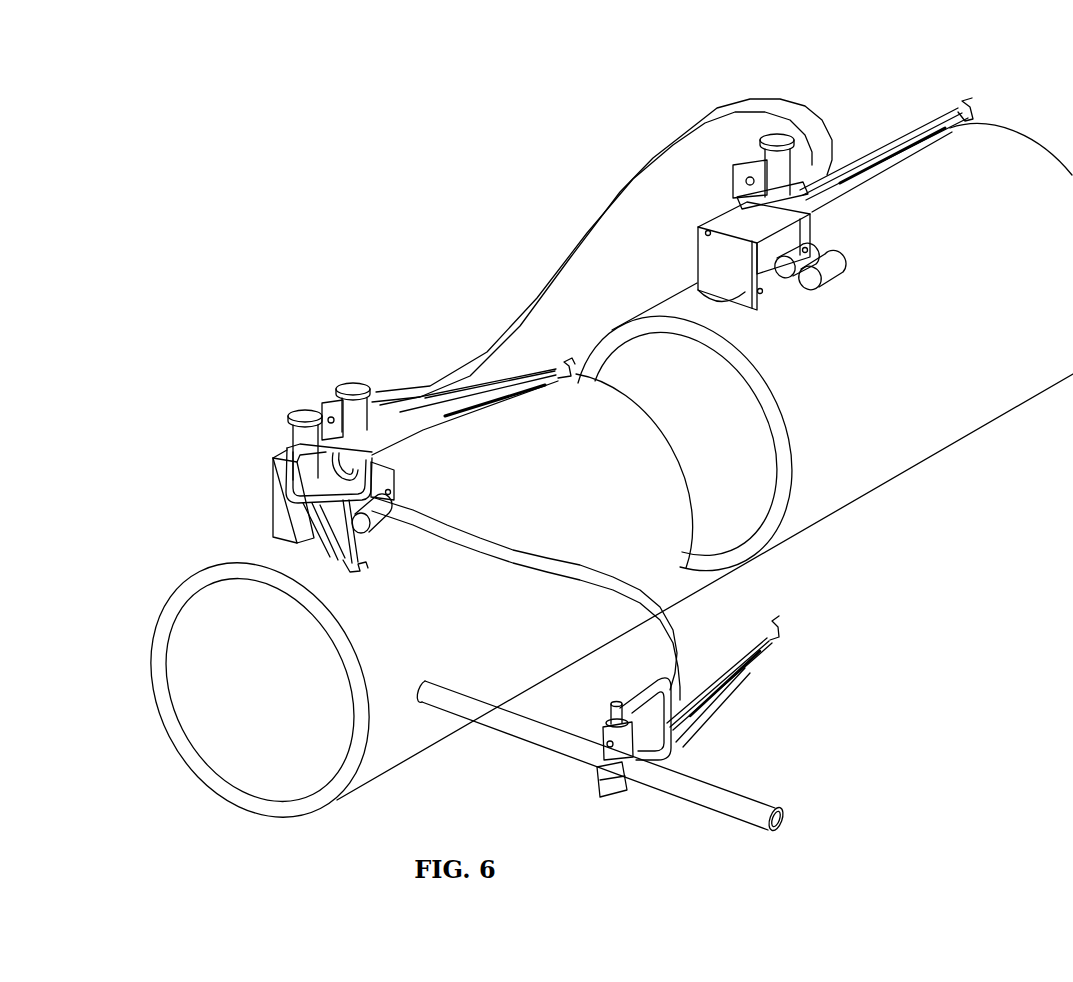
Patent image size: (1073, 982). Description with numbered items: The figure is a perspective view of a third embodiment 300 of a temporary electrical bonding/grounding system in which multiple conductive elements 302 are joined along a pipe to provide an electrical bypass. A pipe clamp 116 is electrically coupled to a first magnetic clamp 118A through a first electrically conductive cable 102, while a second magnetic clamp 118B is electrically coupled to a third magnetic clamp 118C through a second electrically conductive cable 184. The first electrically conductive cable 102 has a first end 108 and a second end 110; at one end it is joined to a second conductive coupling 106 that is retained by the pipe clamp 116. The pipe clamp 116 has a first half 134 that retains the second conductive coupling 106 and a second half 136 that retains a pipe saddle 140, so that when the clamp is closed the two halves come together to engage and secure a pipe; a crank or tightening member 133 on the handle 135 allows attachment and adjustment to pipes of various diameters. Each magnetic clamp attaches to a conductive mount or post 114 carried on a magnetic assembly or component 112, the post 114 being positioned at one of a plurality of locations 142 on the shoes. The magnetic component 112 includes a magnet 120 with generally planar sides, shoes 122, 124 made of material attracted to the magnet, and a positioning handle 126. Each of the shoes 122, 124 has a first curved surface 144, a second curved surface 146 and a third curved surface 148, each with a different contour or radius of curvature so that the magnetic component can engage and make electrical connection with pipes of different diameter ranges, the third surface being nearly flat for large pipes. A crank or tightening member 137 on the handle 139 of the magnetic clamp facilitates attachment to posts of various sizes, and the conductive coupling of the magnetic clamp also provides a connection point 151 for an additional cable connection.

The third embodiment of the temporary electrical bonding/grounding system 300 is at (398, 205).
The conductive elements 302 is at (888, 263).
The first electrically conductive cable 102 is at (567, 560).
The second conductive coupling 106 is at (293, 442).
The first end 108 is at (638, 735).
The second end 110 is at (417, 447).
The first magnetic assembly or component 112 is at (283, 523).
The conductive mount or post 114 is at (767, 137).
The pipe clamp 116 is at (752, 688).
The first magnetic clamp 118A is at (370, 550).
The second magnetic clamp 118B is at (512, 408).
The third magnetic clamp 118C is at (926, 160).
The magnet 120 is at (727, 221).
The shoe 122 is at (745, 290).
The shoe 124 is at (815, 215).
The positioning handle 126 is at (827, 263).
The crank or tightening member 133 is at (777, 622).
The first half of the pipe clamp 134 is at (650, 682).
The handle 135 is at (727, 657).
The second half of the pipe clamp 136 is at (667, 755).
The crank or tightening member 137 is at (570, 358).
The handle 139 is at (513, 377).
The pipe saddle 140 is at (600, 797).
The locations 142 is at (697, 227).
The first curved surface 144 is at (273, 527).
The second curved surface 146 is at (273, 507).
The third curved surface 148 is at (790, 258).
The connection point 151 is at (607, 743).
The second electrically conductive cable 184 is at (648, 163).